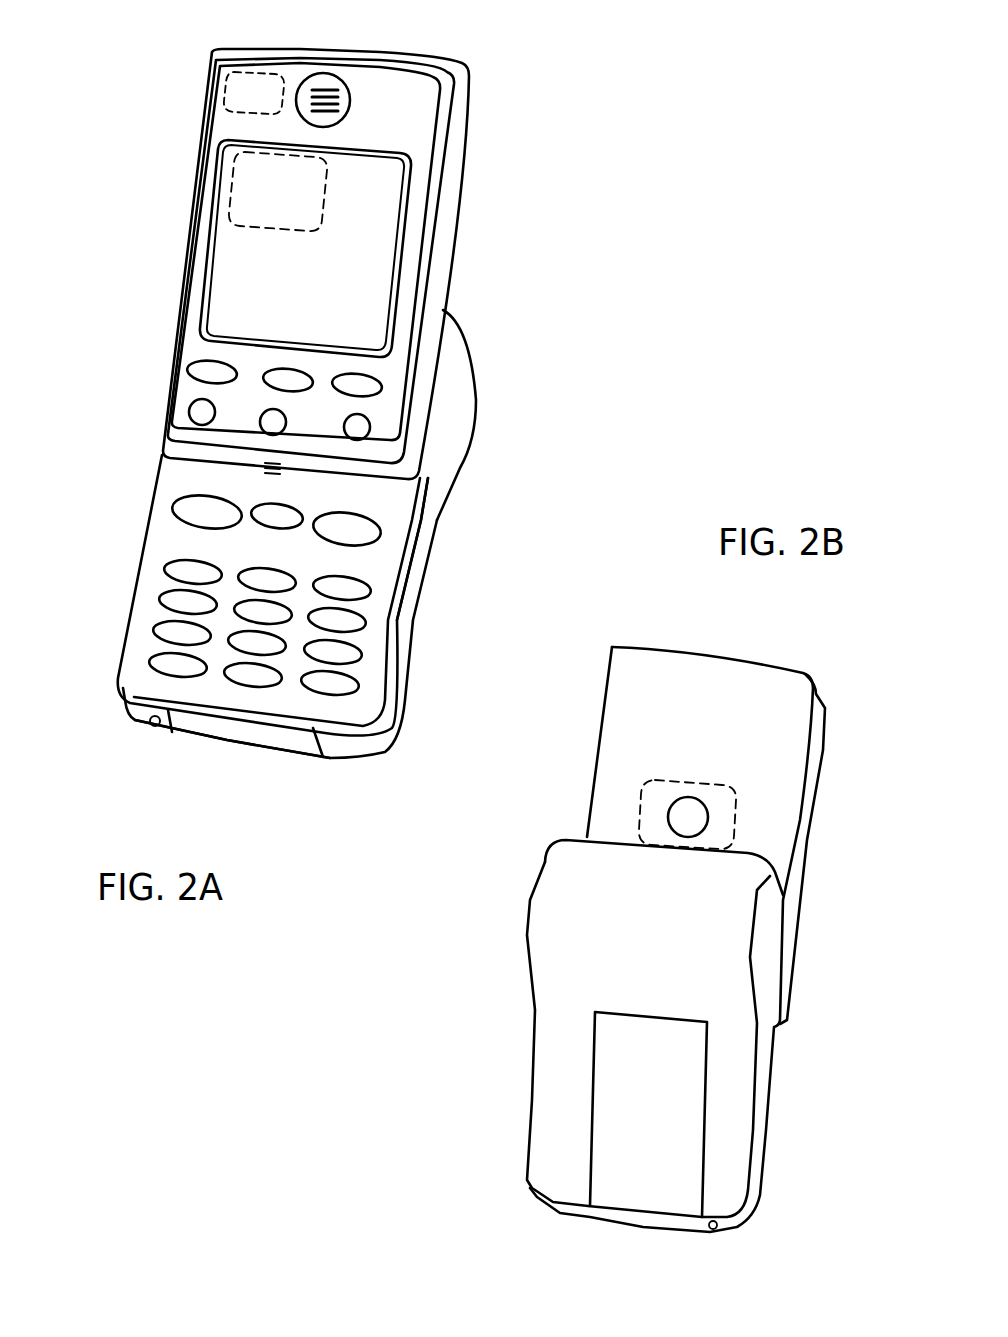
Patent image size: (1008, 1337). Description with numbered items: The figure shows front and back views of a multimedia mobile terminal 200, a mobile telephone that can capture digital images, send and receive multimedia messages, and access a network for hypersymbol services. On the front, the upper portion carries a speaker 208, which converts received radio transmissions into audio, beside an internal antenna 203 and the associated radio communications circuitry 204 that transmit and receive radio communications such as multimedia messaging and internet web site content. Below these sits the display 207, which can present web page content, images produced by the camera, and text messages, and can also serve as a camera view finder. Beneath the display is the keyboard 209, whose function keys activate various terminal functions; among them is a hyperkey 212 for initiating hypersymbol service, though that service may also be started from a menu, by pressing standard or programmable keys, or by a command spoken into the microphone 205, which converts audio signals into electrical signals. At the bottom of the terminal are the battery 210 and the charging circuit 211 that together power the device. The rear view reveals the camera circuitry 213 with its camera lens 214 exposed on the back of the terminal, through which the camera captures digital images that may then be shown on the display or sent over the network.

In FIG. 2A, the multimedia mobile terminal 200 is at (463, 403).
In FIG. 2A, the internal antenna 203 is at (237, 80).
In FIG. 2A, the radio communications circuitry 204 is at (240, 175).
In FIG. 2A, the microphone 205 is at (262, 460).
In FIG. 2A, the display 207 is at (377, 205).
In FIG. 2A, the speaker 208 is at (347, 82).
In FIG. 2A, the keyboard 209 is at (393, 523).
In FIG. 2A, the battery 210 is at (230, 738).
In FIG. 2A, the charging circuit 211 is at (147, 727).
In FIG. 2A, the hyperkey 212 is at (358, 382).
In FIG. 2B, the camera circuitry 213 is at (657, 781).
In FIG. 2B, the camera lens 214 is at (697, 817).